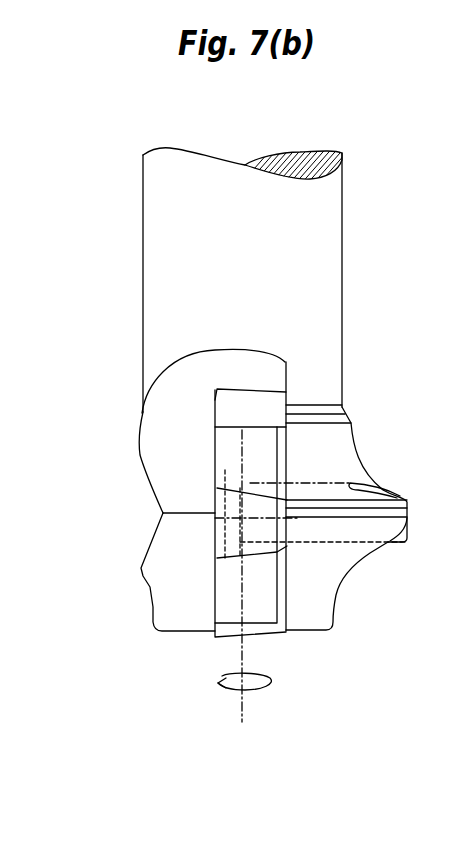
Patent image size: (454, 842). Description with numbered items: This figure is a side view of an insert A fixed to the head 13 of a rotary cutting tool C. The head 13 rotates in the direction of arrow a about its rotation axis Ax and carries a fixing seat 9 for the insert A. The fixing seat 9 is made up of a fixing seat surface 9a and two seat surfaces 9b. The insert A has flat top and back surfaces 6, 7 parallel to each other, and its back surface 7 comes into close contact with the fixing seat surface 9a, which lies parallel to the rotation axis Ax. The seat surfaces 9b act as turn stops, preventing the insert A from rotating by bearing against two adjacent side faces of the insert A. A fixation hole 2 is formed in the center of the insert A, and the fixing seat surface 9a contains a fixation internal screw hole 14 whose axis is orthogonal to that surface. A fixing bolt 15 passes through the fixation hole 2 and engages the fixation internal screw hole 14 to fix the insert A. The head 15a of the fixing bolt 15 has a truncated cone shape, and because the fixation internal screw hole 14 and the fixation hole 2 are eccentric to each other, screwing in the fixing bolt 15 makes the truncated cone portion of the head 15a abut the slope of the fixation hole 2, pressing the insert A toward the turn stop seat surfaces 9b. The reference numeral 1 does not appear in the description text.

The engaging part 1 is at (287, 578).
The fixation hole 2 is at (250, 483).
The top surface 6 is at (210, 579).
The back surface 7 is at (286, 405).
The fixing seat 9 is at (258, 517).
The fixing seat surface 9a is at (286, 596).
The seat surfaces 9b is at (256, 367).
The head 13 is at (162, 306).
The fixation internal screw hole 14 is at (288, 548).
The fixing bolt 15 is at (313, 495).
The head of the fixing bolt 15a is at (213, 533).
The insert A is at (266, 397).
The rotary cutting tool C is at (142, 238).
The rotation axis Ax is at (237, 588).
The direction of rotation a is at (232, 693).